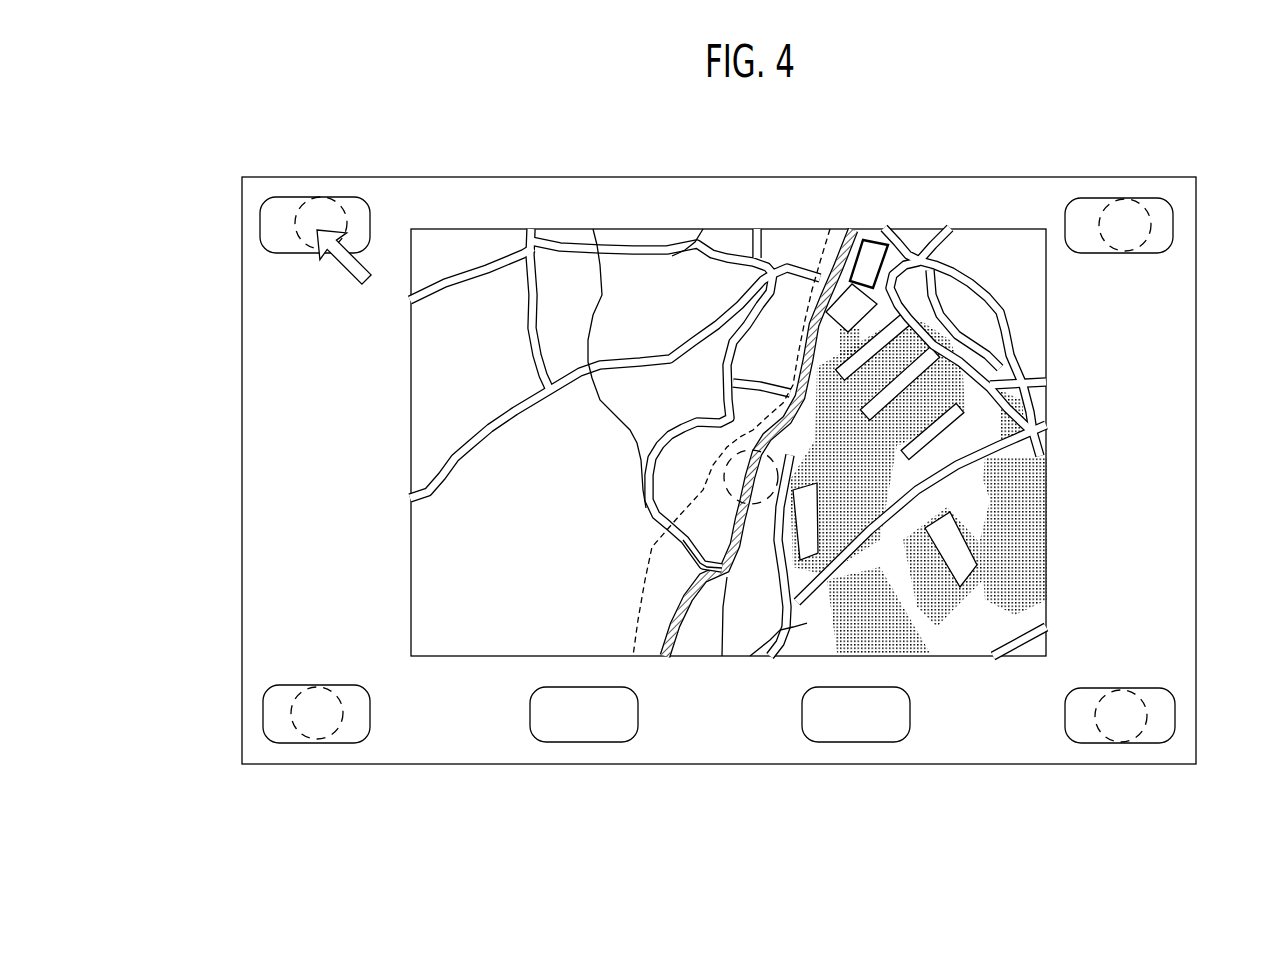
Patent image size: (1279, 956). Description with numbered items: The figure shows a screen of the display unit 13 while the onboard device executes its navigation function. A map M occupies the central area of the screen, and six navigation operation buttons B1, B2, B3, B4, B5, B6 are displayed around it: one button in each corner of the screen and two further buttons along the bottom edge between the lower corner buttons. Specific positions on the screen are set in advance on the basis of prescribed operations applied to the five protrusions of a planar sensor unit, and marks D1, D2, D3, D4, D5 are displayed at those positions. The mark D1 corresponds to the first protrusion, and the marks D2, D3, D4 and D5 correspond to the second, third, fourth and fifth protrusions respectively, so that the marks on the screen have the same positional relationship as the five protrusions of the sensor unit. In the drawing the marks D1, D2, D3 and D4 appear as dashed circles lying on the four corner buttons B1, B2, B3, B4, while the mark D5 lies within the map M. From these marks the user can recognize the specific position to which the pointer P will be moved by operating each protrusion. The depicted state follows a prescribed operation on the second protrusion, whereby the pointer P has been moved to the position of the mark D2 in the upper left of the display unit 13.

The display unit 13 is at (445, 753).
The map M is at (917, 230).
The pointer P is at (348, 280).
The navigation operation button B1 is at (267, 712).
The navigation operation button B2 is at (284, 210).
The navigation operation button B3 is at (1165, 230).
The navigation operation button B4 is at (1160, 698).
The navigation operation button B5 is at (580, 728).
The navigation operation button B6 is at (867, 728).
The mark D1 is at (298, 740).
The mark D2 is at (341, 207).
The mark D3 is at (1103, 210).
The mark D4 is at (1083, 750).
The mark D5 is at (708, 469).